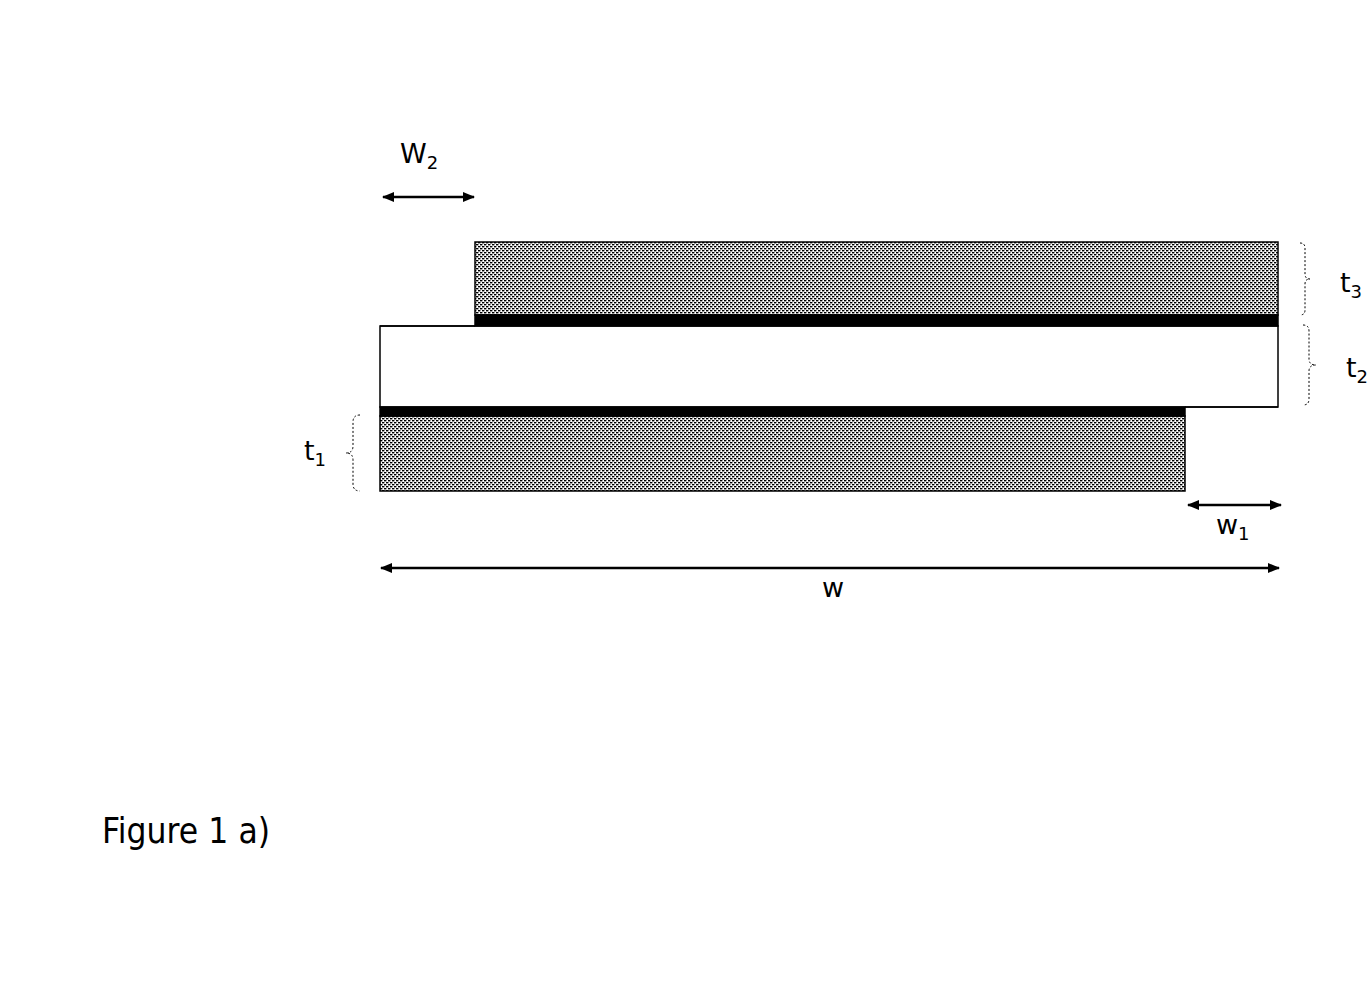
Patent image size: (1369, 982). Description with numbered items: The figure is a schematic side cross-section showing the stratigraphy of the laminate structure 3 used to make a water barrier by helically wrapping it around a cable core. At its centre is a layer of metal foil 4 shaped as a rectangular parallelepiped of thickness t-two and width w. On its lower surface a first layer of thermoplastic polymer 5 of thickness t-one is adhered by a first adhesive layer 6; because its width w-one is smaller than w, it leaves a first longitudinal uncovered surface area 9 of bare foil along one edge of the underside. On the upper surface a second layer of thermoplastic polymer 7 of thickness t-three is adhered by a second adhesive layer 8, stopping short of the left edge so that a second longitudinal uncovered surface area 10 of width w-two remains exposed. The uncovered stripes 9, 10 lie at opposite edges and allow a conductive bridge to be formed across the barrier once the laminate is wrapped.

The laminate structure 3 is at (814, 165).
The layer of metal foil 4 is at (829, 366).
The first layer of thermoplastic polymer 5 is at (782, 453).
The first adhesive layer 6 is at (380, 408).
The second layer of thermoplastic polymer 7 is at (876, 278).
The second adhesive layer 8 is at (1177, 317).
The first longitudinal uncovered surface area 9 is at (1220, 408).
The second longitudinal uncovered surface area 10 is at (423, 323).